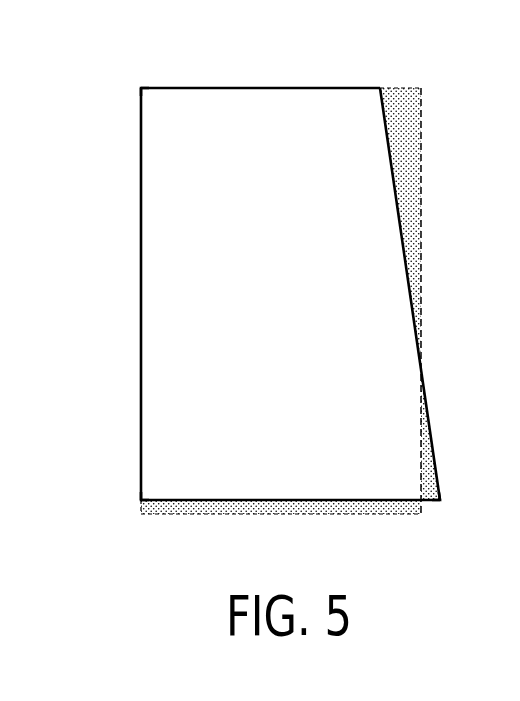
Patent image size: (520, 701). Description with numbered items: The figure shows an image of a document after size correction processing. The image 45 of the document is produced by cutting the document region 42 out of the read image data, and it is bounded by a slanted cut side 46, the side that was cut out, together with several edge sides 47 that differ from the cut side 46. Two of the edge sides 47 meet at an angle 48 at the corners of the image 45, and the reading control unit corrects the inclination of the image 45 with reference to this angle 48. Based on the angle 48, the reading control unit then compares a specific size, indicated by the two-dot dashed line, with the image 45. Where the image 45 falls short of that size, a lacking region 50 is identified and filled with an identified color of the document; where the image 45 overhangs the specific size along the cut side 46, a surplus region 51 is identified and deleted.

The document region 42 is at (405, 225).
The image of the document 45 is at (140, 210).
The cut side 46 is at (411, 277).
The edge side 47 is at (306, 87).
The angle 48 is at (141, 88).
The lacking region 50 is at (410, 130).
The surplus region 51 is at (438, 485).